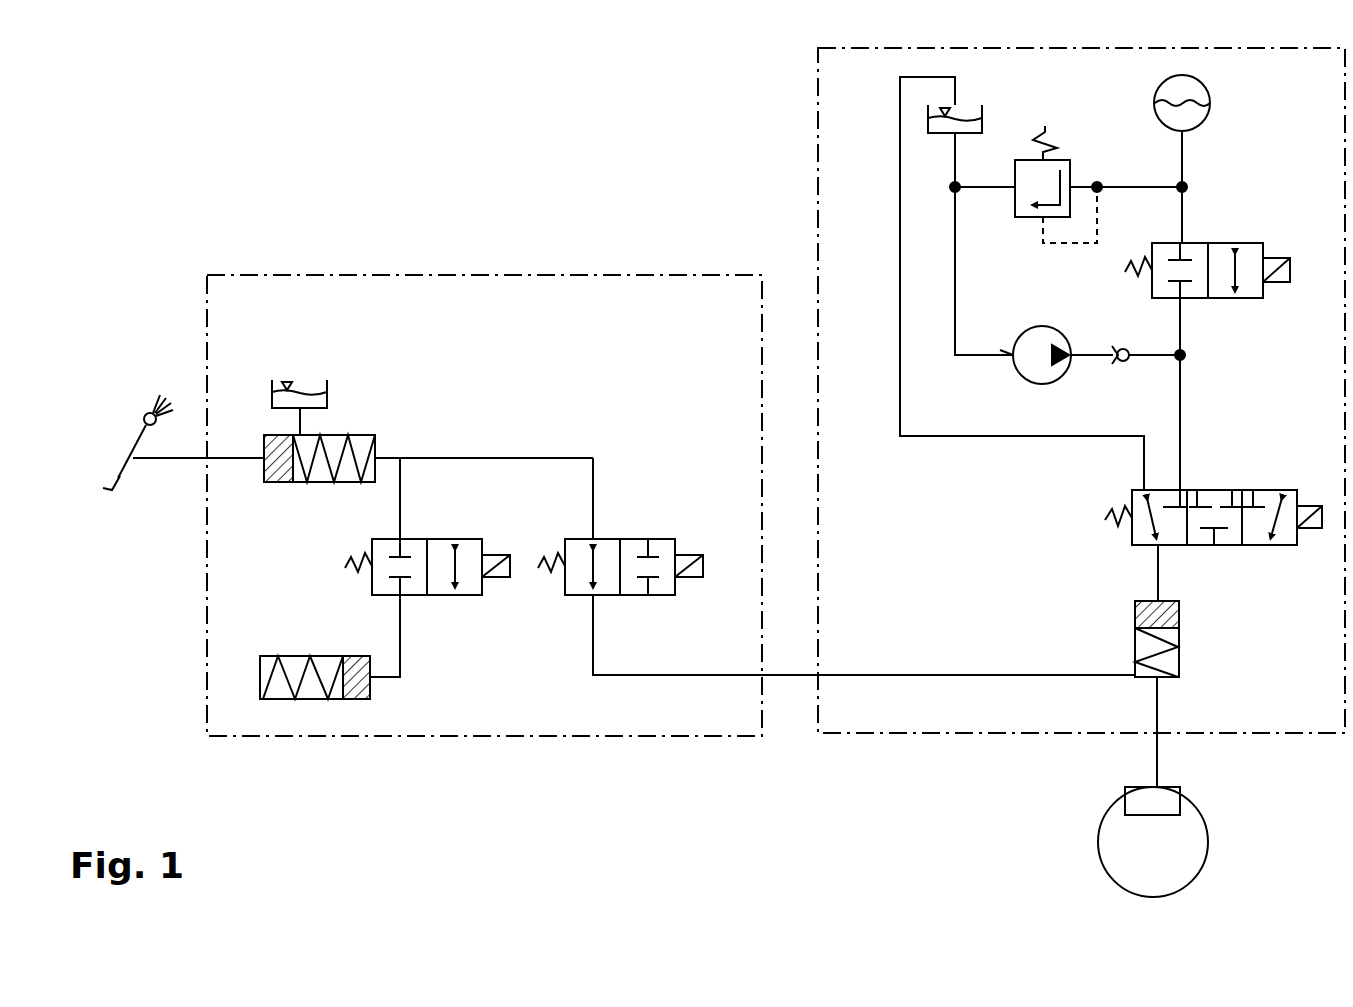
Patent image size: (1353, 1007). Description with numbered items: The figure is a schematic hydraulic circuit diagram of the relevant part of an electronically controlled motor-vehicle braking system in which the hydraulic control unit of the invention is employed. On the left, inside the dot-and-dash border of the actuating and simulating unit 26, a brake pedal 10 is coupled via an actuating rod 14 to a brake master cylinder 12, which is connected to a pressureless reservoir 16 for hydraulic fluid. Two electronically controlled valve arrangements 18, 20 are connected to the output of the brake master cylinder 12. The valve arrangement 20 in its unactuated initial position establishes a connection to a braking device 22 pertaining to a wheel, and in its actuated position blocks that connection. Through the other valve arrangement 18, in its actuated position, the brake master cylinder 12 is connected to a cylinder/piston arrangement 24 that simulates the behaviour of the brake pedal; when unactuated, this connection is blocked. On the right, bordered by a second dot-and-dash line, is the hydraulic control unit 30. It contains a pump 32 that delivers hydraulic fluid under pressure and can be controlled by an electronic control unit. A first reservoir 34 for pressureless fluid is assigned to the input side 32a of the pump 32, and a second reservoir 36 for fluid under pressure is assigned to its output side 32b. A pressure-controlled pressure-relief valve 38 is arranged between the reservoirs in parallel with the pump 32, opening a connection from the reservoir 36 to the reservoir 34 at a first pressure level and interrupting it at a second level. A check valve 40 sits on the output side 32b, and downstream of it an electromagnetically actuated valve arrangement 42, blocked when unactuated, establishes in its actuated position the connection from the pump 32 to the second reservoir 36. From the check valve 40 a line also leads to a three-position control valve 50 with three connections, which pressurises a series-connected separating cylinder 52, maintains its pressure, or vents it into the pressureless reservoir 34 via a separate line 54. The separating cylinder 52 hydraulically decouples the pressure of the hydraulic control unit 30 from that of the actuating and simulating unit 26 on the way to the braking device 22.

The brake pedal 10 is at (120, 480).
The brake master cylinder 12 is at (357, 435).
The actuating rod 14 is at (188, 460).
The pressureless reservoir 16 is at (328, 394).
The valve arrangement 18 is at (427, 539).
The valve arrangement 20 is at (620, 539).
The braking device 22 is at (1160, 795).
The cylinder/piston arrangement 24 is at (325, 656).
The actuating and simulating unit 26 is at (463, 275).
The hydraulic control unit 30 is at (818, 160).
The pump 32 is at (1040, 326).
The input side 32a is at (1010, 350).
The output side 32b is at (1078, 360).
The first reservoir 34 is at (985, 112).
The second reservoir 36 is at (1210, 95).
The pressure-relief valve 38 is at (1065, 160).
The check valve 40 is at (1118, 348).
The valve arrangement 42 is at (1210, 245).
The 3-position control valve 50 is at (1213, 490).
The separating cylinder 52 is at (1180, 628).
The separate line 54 is at (1060, 436).